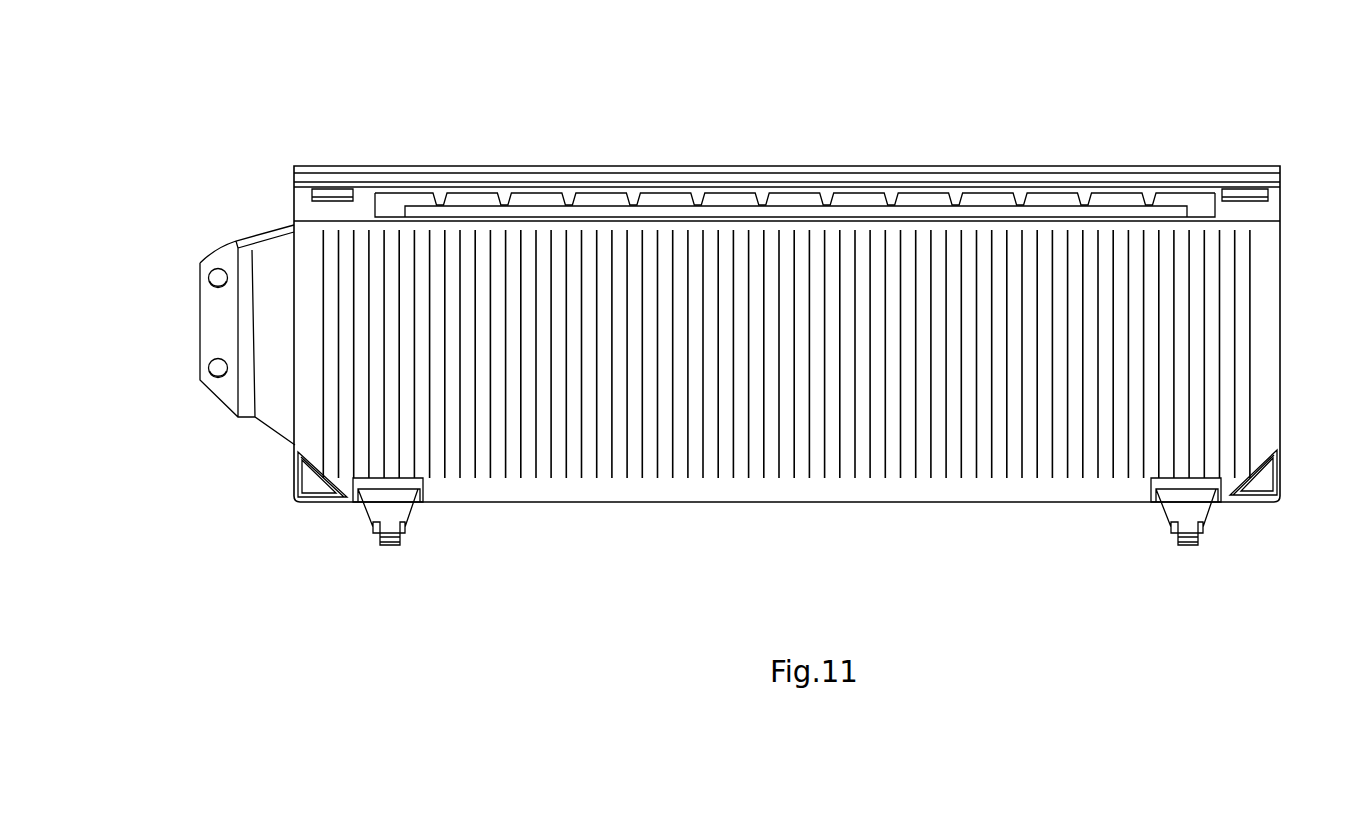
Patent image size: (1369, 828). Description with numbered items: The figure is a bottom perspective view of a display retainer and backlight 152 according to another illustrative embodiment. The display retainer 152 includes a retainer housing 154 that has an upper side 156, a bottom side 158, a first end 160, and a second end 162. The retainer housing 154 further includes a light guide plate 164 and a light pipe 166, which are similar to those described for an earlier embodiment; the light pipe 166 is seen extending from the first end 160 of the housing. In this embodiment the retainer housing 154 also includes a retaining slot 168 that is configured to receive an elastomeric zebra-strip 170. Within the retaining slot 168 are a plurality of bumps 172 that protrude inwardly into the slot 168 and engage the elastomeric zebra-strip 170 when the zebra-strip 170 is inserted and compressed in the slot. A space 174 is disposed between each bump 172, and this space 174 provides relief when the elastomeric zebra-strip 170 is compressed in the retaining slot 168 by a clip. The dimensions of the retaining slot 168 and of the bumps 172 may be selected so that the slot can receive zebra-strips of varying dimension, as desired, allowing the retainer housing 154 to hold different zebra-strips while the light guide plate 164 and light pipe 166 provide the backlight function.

The display retainer and backlight 152 is at (736, 325).
The retainer housing 154 is at (1275, 520).
The upper side 156 is at (393, 158).
The bottom side 158 is at (489, 522).
The first end 160 is at (278, 472).
The second end 162 is at (736, 345).
The light guide plate 164 is at (1267, 272).
The light pipe 166 is at (218, 327).
The retaining slot 168 is at (541, 190).
The elastomeric zebra-strip 170 is at (817, 173).
The bumps 172 is at (825, 203).
The space 174 is at (850, 200).